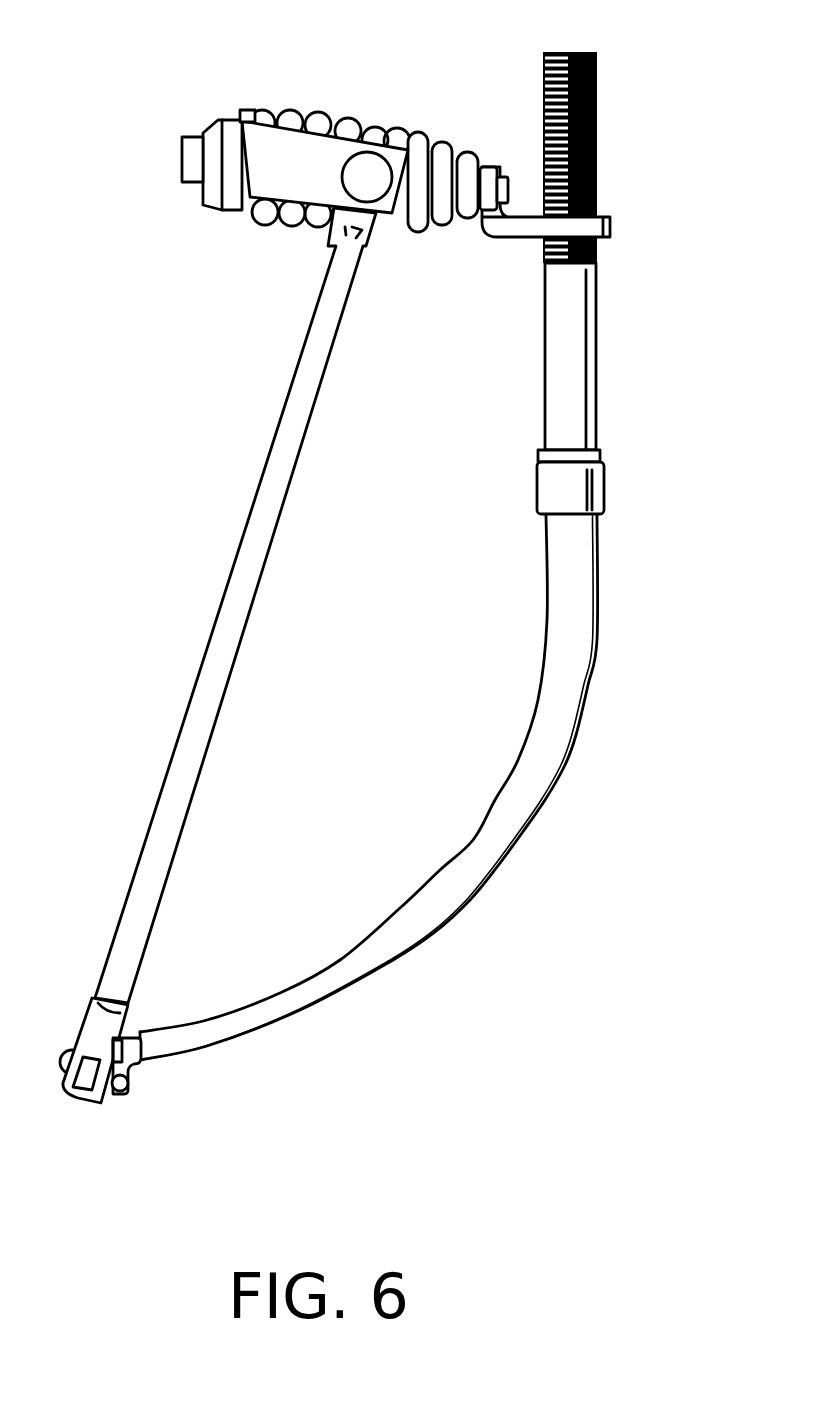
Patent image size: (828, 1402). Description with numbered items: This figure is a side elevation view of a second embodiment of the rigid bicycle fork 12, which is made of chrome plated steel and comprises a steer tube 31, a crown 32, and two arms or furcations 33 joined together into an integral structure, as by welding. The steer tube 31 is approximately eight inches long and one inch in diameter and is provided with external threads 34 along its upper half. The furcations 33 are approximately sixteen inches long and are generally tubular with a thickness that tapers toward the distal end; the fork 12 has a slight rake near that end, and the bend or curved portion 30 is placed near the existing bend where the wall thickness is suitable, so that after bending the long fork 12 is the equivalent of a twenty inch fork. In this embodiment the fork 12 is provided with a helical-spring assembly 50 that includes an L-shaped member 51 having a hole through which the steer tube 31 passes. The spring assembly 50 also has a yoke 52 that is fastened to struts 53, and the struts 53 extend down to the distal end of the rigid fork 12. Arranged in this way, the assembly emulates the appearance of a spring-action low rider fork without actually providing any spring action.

The rigid bicycle fork 12 is at (385, 678).
The curved portion 30 is at (503, 838).
The steer tube 31 is at (562, 353).
The crown 32 is at (552, 485).
The furcations 33 is at (340, 960).
The external threads 34 is at (547, 108).
The helical-spring assembly 50 is at (284, 551).
The L-shaped member 51 is at (612, 228).
The yoke 52 is at (273, 227).
The struts 53 is at (203, 703).